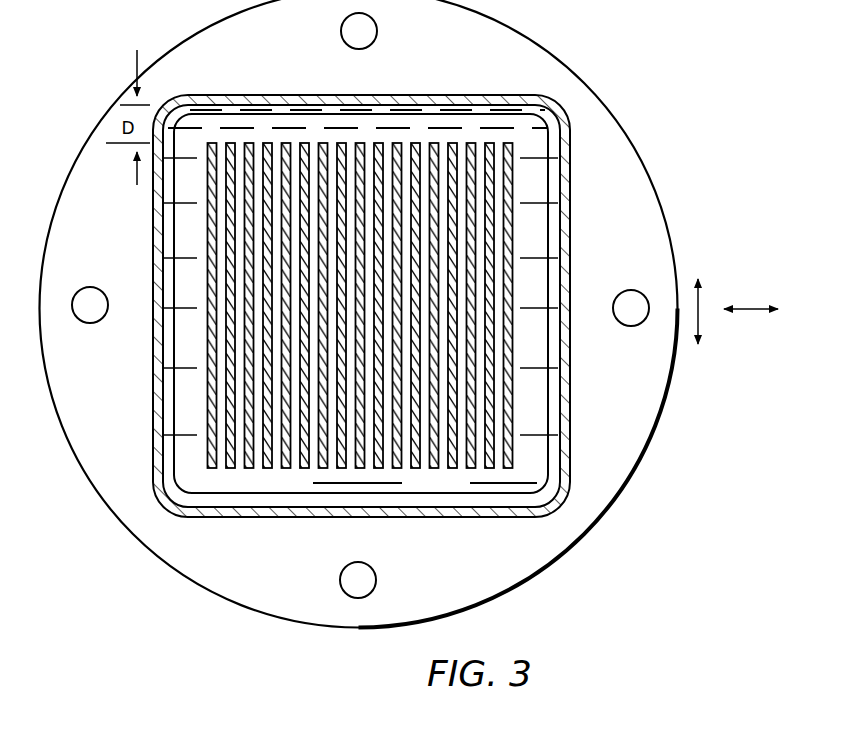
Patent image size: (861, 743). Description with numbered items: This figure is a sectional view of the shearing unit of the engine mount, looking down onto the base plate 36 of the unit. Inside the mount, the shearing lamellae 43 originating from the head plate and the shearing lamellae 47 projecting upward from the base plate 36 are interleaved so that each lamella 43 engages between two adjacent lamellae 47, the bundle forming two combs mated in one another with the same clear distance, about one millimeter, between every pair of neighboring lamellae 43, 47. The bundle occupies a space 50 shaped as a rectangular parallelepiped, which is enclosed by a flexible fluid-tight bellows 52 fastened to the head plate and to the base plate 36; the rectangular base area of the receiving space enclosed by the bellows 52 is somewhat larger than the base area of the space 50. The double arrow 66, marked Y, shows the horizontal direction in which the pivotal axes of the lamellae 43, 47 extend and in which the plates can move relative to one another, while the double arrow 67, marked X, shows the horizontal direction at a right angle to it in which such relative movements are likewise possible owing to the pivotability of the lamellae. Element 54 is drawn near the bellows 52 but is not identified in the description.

The base plate 36 is at (623, 455).
The shearing lamellae 43 is at (303, 143).
The shearing lamellae 47 is at (287, 468).
The space 50 is at (424, 138).
The bellows 52 is at (493, 92).
The inner frame edge / window 54 is at (383, 95).
The double arrow (Y-direction) 66 is at (698, 310).
The double arrow (X-direction) 67 is at (748, 309).